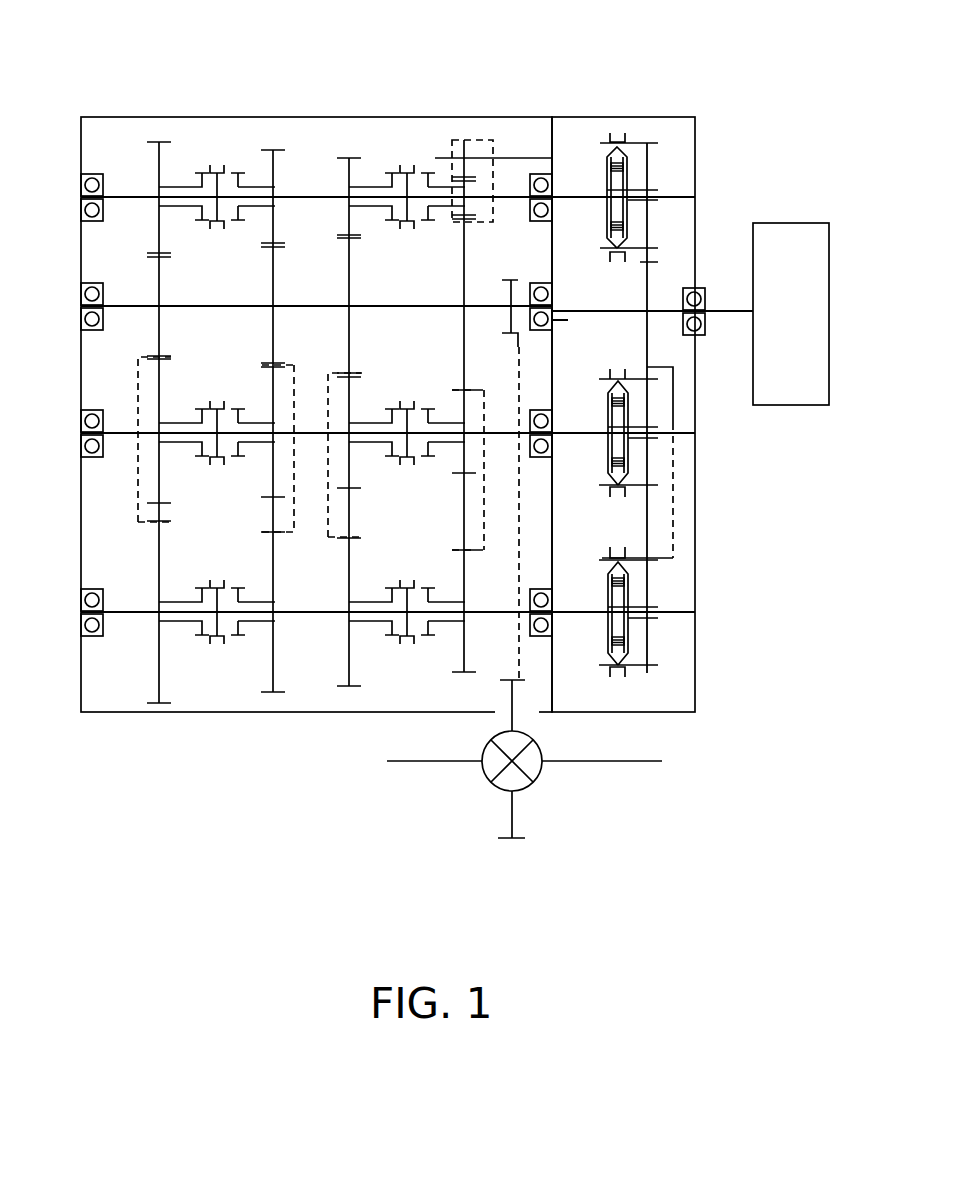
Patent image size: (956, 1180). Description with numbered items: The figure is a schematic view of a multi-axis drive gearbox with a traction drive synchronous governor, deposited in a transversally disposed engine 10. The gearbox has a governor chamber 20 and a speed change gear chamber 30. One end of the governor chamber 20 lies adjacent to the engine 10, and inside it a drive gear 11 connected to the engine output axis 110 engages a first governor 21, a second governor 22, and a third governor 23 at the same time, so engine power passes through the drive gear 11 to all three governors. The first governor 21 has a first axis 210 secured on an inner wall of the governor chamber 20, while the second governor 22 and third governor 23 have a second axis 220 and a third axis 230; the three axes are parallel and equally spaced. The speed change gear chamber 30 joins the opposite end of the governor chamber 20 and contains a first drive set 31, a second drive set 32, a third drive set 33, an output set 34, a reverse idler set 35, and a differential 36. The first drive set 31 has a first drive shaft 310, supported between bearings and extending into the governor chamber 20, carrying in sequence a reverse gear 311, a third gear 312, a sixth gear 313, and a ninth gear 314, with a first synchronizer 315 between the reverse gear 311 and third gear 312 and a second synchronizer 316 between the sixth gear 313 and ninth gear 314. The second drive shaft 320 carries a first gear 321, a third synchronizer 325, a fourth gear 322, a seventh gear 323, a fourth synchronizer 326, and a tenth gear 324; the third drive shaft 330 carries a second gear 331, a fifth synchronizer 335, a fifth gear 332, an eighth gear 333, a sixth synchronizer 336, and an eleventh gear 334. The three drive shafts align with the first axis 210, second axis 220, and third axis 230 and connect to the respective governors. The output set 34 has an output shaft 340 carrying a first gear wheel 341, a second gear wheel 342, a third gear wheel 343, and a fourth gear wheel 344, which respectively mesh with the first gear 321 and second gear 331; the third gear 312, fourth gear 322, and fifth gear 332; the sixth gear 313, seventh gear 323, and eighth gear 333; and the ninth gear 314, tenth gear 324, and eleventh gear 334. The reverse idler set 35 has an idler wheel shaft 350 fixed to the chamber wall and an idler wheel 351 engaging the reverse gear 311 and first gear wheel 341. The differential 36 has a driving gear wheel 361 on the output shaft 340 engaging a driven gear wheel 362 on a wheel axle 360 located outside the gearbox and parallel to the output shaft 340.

The engine 10 is at (780, 225).
The drive gear 11 is at (648, 285).
The engine output axis 110 is at (720, 315).
The governor chamber 20 is at (683, 137).
The first governor 21 is at (612, 133).
The second governor 22 is at (627, 468).
The third governor 23 is at (630, 642).
The first axis 210 is at (678, 197).
The second axis 220 is at (683, 435).
The third axis 230 is at (670, 610).
The speed change gear chamber 30 is at (545, 135).
The first drive set 31 is at (272, 124).
The second drive set 32 is at (285, 461).
The third drive set 33 is at (250, 698).
The output set 34 is at (311, 421).
The reverse idler set 35 is at (518, 130).
The differential 36 is at (554, 564).
The first drive shaft 310 is at (138, 197).
The reverse gear 311 is at (437, 185).
The third gear 312 is at (380, 187).
The sixth gear 313 is at (253, 187).
The ninth gear 314 is at (180, 183).
The first synchronizer 315 is at (403, 165).
The second synchronizer 316 is at (217, 165).
The second drive shaft 320 is at (123, 437).
The first gear 321 is at (443, 443).
The fourth gear 322 is at (377, 443).
The seventh gear 323 is at (262, 442).
The tenth gear 324 is at (183, 443).
The third synchronizer 325 is at (407, 465).
The fourth synchronizer 326 is at (217, 467).
The third drive shaft 330 is at (140, 613).
The second gear 331 is at (407, 647).
The fifth gear 332 is at (370, 627).
The eighth gear 333 is at (257, 622).
The eleventh gear 334 is at (180, 627).
The fifth synchronizer 335 is at (447, 630).
The sixth synchronizer 336 is at (217, 645).
The output shaft 340 is at (237, 303).
The first gear wheel 341 is at (464, 325).
The second gear wheel 342 is at (349, 285).
The third gear wheel 343 is at (273, 307).
The fourth gear wheel 344 is at (160, 297).
The idler wheel shaft 350 is at (520, 158).
The idler wheel 351 is at (470, 135).
The wheel axle 360 is at (620, 761).
The driving gear wheel 361 is at (512, 287).
The driven gear wheel 362 is at (515, 818).